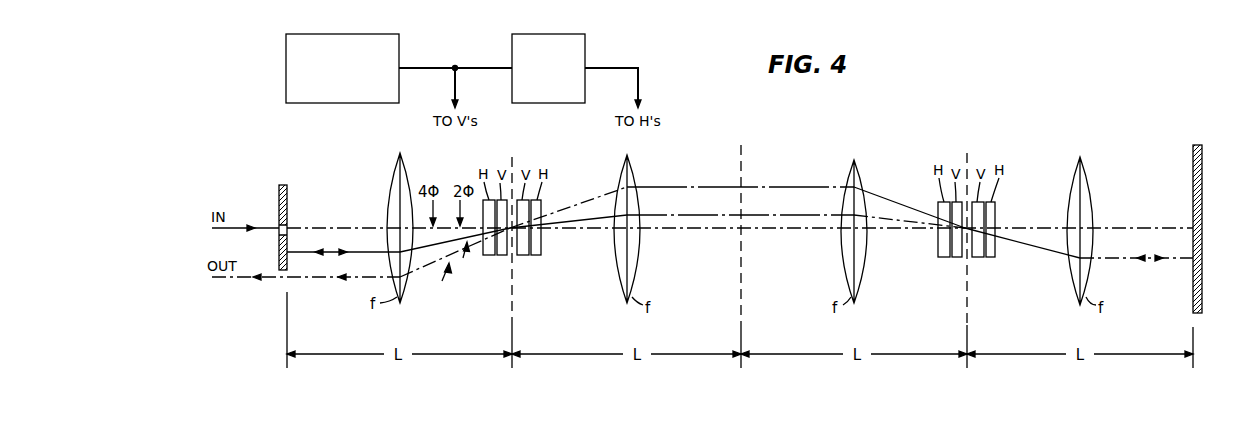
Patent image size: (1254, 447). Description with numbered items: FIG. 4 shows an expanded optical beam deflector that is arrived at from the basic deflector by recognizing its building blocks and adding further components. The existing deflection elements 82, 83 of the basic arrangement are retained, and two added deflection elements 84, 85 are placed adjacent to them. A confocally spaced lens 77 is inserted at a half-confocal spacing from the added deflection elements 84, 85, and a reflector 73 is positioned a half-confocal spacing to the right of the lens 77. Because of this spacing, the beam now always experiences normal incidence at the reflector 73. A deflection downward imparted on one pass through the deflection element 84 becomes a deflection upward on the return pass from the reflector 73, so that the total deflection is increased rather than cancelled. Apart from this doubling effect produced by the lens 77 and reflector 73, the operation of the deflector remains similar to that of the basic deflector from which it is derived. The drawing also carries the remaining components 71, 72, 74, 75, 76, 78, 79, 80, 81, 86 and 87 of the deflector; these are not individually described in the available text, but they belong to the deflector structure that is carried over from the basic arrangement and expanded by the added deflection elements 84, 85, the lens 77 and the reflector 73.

The aperture in mirror 71 is at (288, 228).
The input mirror 72 is at (279, 191).
The reflector 73 is at (1202, 151).
The lens 74 is at (397, 166).
The lens 75 is at (630, 163).
The lens 76 is at (857, 166).
The lens 77 is at (1083, 163).
The electro-optic crystal plate (H) 78 is at (489, 255).
The electro-optic crystal plate (V) 79 is at (501, 255).
The electro-optic crystal plate (V) 80 is at (521, 255).
The electro-optic crystal plate (H) 81 is at (536, 255).
The deflection element 82 is at (941, 257).
The deflection element 83 is at (955, 257).
The deflection element 84 is at (977, 257).
The deflection element 85 is at (990, 257).
The synchronous modulator 86 is at (286, 53).
The 90 degree phase shifter 87 is at (585, 45).